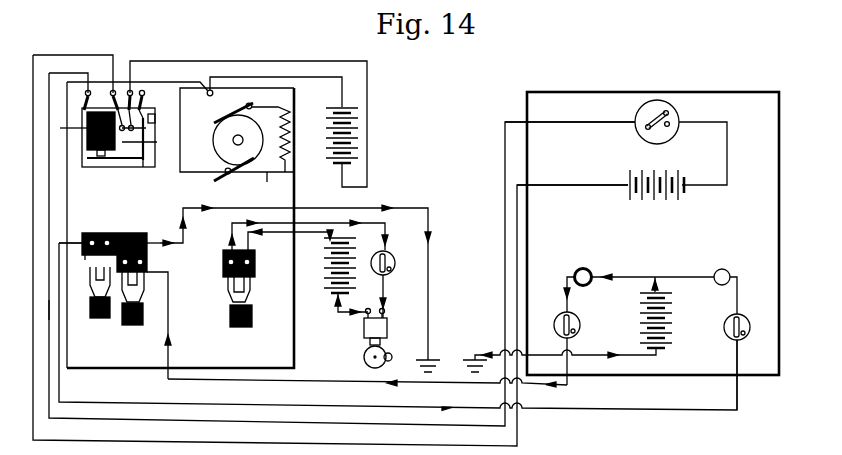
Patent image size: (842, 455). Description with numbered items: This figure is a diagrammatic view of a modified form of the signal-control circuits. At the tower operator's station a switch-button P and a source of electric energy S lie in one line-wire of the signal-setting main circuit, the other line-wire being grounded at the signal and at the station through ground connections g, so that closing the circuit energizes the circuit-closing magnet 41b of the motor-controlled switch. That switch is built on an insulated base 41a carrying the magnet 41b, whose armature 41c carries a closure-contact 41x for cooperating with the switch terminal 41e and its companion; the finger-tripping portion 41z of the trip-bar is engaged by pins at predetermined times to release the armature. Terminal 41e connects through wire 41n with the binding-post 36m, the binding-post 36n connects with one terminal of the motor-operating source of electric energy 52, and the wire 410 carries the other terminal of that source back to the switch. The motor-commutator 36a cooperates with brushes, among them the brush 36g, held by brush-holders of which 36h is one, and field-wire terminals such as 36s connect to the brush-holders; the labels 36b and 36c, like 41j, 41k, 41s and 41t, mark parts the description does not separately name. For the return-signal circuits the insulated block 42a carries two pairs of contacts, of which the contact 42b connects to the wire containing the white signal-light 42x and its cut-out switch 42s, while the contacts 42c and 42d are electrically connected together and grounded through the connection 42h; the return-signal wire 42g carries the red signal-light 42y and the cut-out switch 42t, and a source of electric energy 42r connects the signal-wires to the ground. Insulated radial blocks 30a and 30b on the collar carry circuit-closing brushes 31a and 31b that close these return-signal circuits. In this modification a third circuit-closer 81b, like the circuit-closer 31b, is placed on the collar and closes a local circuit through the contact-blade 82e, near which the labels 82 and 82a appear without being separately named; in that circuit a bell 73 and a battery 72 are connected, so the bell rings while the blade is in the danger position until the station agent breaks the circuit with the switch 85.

The wire 410 is at (217, 61).
The contact 41j is at (89, 90).
The contact 41k is at (115, 90).
The insulated base 41a is at (82, 150).
The circuit-closing magnet 41b is at (60, 128).
The armature 41c is at (96, 167).
The closure-contact 41x is at (126, 160).
The finger-tripping portion 41z is at (144, 162).
The terminal of motor-controlled switch 41e is at (157, 120).
The contact bar 41s is at (146, 142).
The wire 41n is at (158, 170).
The wire 41t is at (49, 307).
The motor-commutator 36a is at (237, 130).
The governor hub 36c is at (232, 141).
The brush-holder 36h is at (233, 118).
The binding-post 36n is at (254, 105).
The brush 36g is at (240, 170).
The binding-post 36m is at (226, 175).
The field-wire terminal 36s is at (272, 186).
The resistance 36b is at (290, 130).
The motor-operating source of electric energy 52 is at (356, 140).
The insulated block 42a is at (127, 228).
The contact 42b is at (82, 243).
The contact 42c is at (85, 257).
The contact 42d is at (147, 247).
The grounded connection 42h is at (404, 206).
The return-signal wire 42g is at (168, 328).
The circuit-closing brush 31b is at (92, 283).
The insulated radial block 30b is at (95, 318).
The circuit-closing brush 31a is at (141, 296).
The insulated radial block 30a is at (131, 325).
The relay 82 is at (224, 268).
The wire 82a is at (302, 235).
The contact-blade 82e is at (255, 262).
The third circuit-closer 81b is at (246, 297).
The battery 72 is at (323, 272).
The switch 85 is at (389, 259).
The bell 73 is at (378, 339).
The ground g is at (529, 364).
The switch-button P is at (678, 116).
The source of electric energy S is at (661, 183).
The red signal-light 42y is at (592, 261).
The white signal-light 42x is at (727, 261).
The cut-out switch 42t is at (576, 321).
The source of electric energy 42r is at (668, 331).
The cut-out switch 42s is at (742, 317).